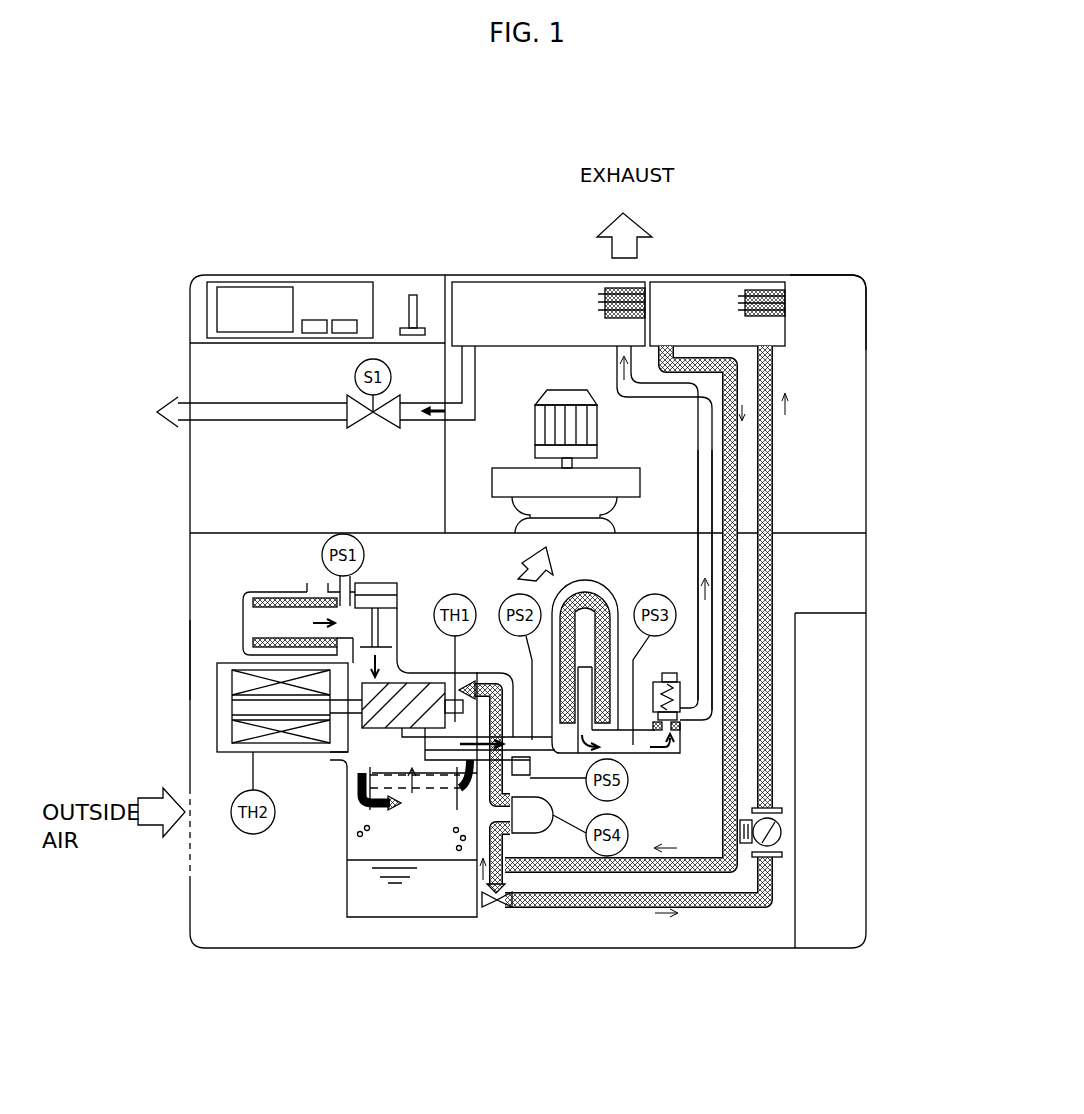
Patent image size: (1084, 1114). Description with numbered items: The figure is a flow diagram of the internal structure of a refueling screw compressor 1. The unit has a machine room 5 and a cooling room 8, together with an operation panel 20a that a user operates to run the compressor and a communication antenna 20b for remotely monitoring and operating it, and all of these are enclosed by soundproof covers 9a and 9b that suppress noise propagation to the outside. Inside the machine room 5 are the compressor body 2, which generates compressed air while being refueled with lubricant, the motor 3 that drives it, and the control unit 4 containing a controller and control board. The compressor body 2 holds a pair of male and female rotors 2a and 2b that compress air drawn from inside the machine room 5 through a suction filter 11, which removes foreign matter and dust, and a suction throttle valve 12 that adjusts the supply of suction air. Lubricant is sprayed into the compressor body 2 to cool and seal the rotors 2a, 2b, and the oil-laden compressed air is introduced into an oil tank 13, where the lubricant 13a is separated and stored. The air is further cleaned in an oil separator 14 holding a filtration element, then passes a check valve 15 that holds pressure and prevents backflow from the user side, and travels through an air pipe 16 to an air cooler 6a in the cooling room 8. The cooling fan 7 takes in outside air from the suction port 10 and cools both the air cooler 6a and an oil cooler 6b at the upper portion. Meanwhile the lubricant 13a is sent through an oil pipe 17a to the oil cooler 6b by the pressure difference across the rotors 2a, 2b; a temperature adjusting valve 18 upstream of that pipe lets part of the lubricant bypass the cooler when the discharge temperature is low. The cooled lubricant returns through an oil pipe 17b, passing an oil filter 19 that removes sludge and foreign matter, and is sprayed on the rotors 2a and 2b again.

The refueling screw compressor 1 is at (466, 258).
The compressor body 2 is at (357, 727).
The male rotor 2a is at (402, 728).
The female rotor 2b is at (465, 914).
The motor 3 is at (250, 682).
The control unit 4 is at (837, 690).
The machine room 5 is at (255, 860).
The air cooler 6a is at (546, 305).
The oil cooler 6b is at (730, 312).
The cooling fan 7 is at (502, 487).
The cooling room 8 is at (680, 440).
The soundproof cover 9a is at (190, 665).
The soundproof cover 9b is at (812, 275).
The suction port 10 is at (187, 845).
The suction filter 11 is at (268, 622).
The suction throttle valve 12 is at (367, 627).
The oil tank 13 is at (363, 850).
The lubricant 13a is at (455, 883).
The oil separator 14 is at (600, 590).
The check valve 15 is at (677, 675).
The air pipe 16 is at (708, 512).
The oil pipe 17a is at (627, 907).
The oil pipe 17b is at (690, 858).
The temperature adjusting valve 18 is at (508, 907).
The oil filter 19 is at (752, 810).
The operation panel 20a is at (321, 297).
The communication antenna 20b is at (415, 295).